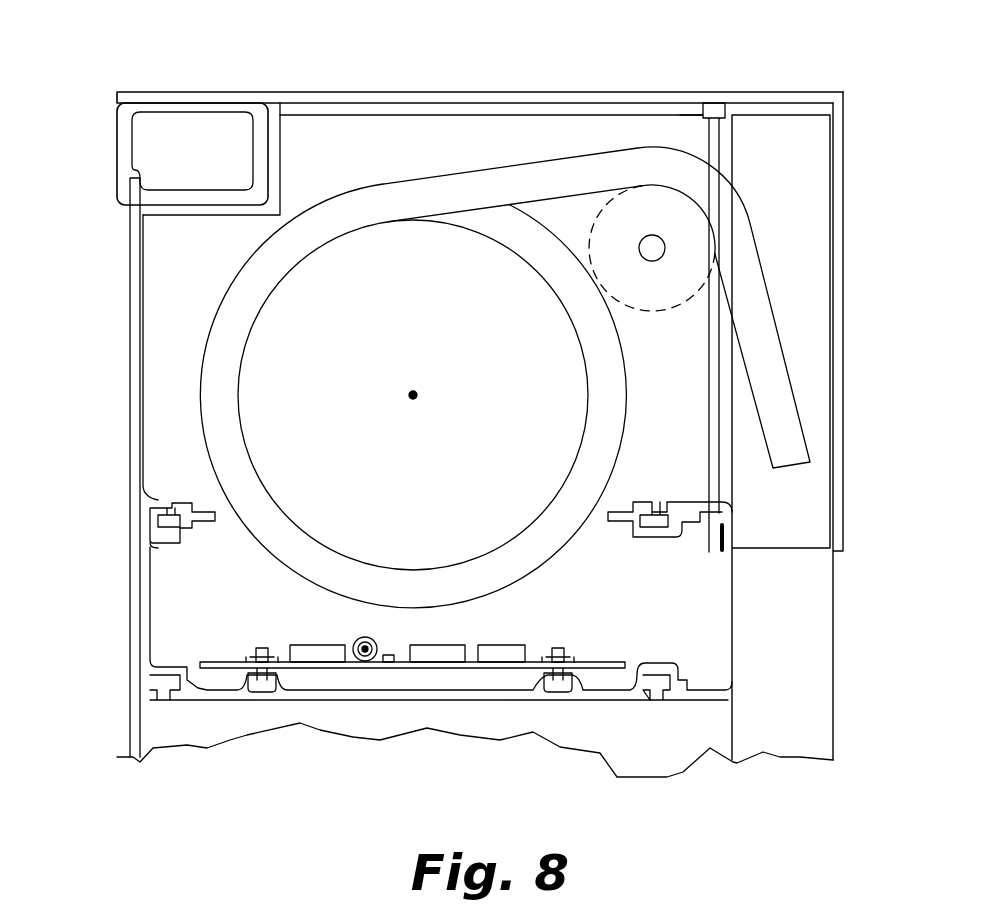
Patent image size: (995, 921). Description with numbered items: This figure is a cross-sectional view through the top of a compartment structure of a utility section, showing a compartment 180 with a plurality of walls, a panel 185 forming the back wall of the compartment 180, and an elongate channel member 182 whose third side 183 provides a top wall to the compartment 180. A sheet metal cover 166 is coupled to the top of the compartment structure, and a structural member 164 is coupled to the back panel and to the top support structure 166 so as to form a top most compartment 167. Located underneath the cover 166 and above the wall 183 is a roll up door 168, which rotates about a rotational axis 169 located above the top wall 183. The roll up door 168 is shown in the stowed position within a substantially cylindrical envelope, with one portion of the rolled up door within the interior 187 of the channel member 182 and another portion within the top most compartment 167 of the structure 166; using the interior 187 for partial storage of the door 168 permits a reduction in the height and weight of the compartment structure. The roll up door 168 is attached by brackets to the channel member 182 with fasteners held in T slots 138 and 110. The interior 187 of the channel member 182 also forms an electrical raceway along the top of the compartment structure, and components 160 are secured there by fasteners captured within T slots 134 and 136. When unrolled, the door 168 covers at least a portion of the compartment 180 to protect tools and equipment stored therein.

The T slot 110 is at (658, 515).
The T slot 134 is at (263, 688).
The T slot 136 is at (550, 688).
The T slot 138 is at (153, 507).
The components 160 is at (350, 662).
The structural member 164 is at (117, 123).
The sheet metal cover 166 is at (400, 92).
The top most compartment 167 is at (352, 165).
The roll up door 168 is at (767, 337).
The rotational axis 169 is at (411, 393).
The compartment 180 is at (628, 744).
The elongate channel member 182 is at (143, 625).
The third side 183 is at (413, 700).
The panel 185 is at (130, 352).
The interior 187 is at (606, 603).